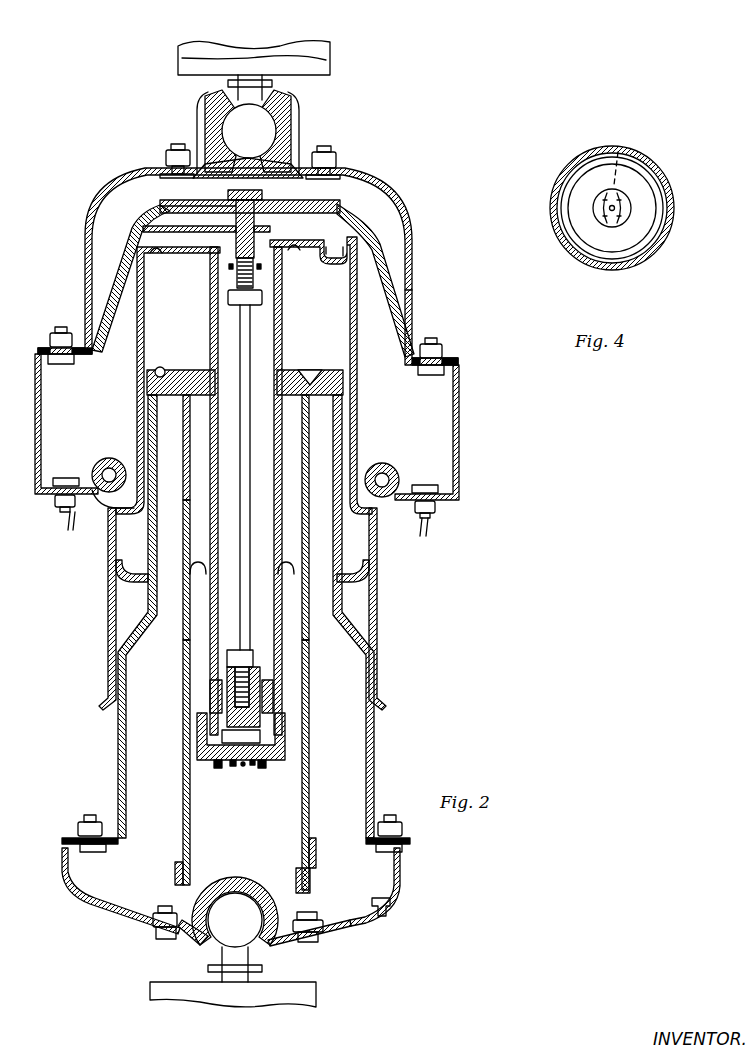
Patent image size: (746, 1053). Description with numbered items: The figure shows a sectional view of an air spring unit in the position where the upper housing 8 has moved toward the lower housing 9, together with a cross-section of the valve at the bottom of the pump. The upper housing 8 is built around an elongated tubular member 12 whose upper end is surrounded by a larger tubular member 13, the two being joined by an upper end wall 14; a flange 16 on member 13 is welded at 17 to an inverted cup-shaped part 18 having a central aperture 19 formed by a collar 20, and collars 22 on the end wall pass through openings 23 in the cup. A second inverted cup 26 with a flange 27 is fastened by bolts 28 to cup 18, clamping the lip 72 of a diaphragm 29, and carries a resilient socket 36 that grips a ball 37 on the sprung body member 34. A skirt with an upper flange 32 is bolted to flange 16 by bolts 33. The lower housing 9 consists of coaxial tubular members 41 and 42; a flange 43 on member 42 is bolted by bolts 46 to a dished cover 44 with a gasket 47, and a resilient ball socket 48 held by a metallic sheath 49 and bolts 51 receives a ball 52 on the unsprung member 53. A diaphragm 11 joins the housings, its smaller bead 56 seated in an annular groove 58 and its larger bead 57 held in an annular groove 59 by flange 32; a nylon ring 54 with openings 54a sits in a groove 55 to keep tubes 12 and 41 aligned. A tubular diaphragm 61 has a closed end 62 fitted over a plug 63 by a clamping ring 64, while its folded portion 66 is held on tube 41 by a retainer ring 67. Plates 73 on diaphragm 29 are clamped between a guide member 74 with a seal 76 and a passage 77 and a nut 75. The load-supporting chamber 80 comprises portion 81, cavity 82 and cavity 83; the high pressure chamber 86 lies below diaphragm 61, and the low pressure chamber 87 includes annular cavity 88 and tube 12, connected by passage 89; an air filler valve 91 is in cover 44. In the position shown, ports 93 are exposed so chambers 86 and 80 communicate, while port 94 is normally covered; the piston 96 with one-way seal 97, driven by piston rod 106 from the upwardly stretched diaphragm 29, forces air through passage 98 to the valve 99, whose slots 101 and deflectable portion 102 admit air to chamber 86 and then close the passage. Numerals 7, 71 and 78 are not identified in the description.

In FIG. 2, the lower housing section 7 is at (462, 437).
In FIG. 2, the upper housing 8 is at (422, 212).
In FIG. 2, the lower housing 9 is at (375, 772).
In FIG. 2, the diaphragm 11 is at (360, 578).
In FIG. 2, the elongated tubular member 12 is at (212, 326).
In FIG. 2, the tubular member 13 is at (349, 352).
In FIG. 2, the upper end wall 14 is at (142, 265).
In FIG. 2, the flange 16 is at (448, 484).
In FIG. 2, the weld 17 is at (458, 492).
In FIG. 2, the inverted cup-shaped part 18 is at (460, 405).
In FIG. 2, the central aperture 19 is at (262, 280).
In FIG. 2, the collar 20 is at (228, 298).
In FIG. 2, the collars 22 is at (333, 262).
In FIG. 2, the openings 23 is at (322, 220).
In FIG. 2, the second inverted cup 26 is at (414, 292).
In FIG. 2, the flange 27 is at (58, 343).
In FIG. 2, the bolts 28 is at (68, 372).
In FIG. 2, the diaphragm 29 is at (392, 262).
In FIG. 2, the upper flange 32 is at (78, 520).
In FIG. 2, the bolts 33 is at (65, 478).
In FIG. 2, the sprung body member 34 is at (320, 60).
In FIG. 2, the resilient socket 36 is at (300, 150).
In FIG. 2, the ball 37 is at (230, 118).
In FIG. 2, the inner tubular member 41 is at (183, 672).
In FIG. 4, the inner tubular member 41 is at (672, 212).
In FIG. 2, the outer tubular member 42 is at (126, 772).
In FIG. 2, the flange 43 is at (85, 830).
In FIG. 2, the dished cover 44 is at (115, 906).
In FIG. 2, the bolts 46 is at (95, 852).
In FIG. 2, the gasket 47 is at (68, 845).
In FIG. 2, the resilient ball socket 48 is at (255, 882).
In FIG. 2, the metallic sheath 49 is at (282, 945).
In FIG. 2, the bolts 51 is at (163, 905).
In FIG. 2, the ball 52 is at (226, 938).
In FIG. 2, the unsprung member 53 is at (276, 995).
In FIG. 2, the nylon ring 54 is at (188, 412).
In FIG. 2, the openings 54a is at (303, 370).
In FIG. 2, the groove 55 is at (200, 370).
In FIG. 2, the bead 56 is at (160, 402).
In FIG. 2, the bead 57 is at (112, 458).
In FIG. 2, the annular groove 58 is at (160, 368).
In FIG. 2, the annular groove 59 is at (100, 458).
In FIG. 2, the elongated tubular diaphragm 61 is at (191, 828).
In FIG. 4, the elongated tubular diaphragm 61 is at (655, 163).
In FIG. 2, the closed end 62 is at (218, 770).
In FIG. 4, the closed end 62 is at (594, 208).
In FIG. 2, the plug 63 is at (222, 700).
In FIG. 2, the clamping ring 64 is at (286, 755).
In FIG. 4, the clamping ring 64 is at (640, 255).
In FIG. 2, the folded portion 66 is at (310, 846).
In FIG. 2, the retainer ring 67 is at (310, 872).
In FIG. 2, the outer shell 71 is at (108, 620).
In FIG. 2, the lip or flange 72 is at (45, 352).
In FIG. 2, the plates 73 is at (186, 200).
In FIG. 2, the guide member 74 is at (236, 240).
In FIG. 2, the nut 75 is at (234, 200).
In FIG. 2, the seal 76 is at (288, 120).
In FIG. 2, the passage 77 is at (266, 200).
In FIG. 2, the clamp shell 78 is at (248, 135).
In FIG. 2, the load-supporting chamber 80 is at (307, 324).
In FIG. 2, the portion of load-supporting chamber 81 is at (354, 320).
In FIG. 2, the cavity 82 is at (150, 222).
In FIG. 2, the cavity 83 is at (380, 205).
In FIG. 2, the high pressure chamber 86 is at (240, 840).
In FIG. 2, the low pressure chamber 87 is at (428, 440).
In FIG. 2, the annular cavity 88 is at (458, 458).
In FIG. 2, the passage 89 is at (160, 254).
In FIG. 2, the air filler valve 91 is at (392, 916).
In FIG. 2, the ports 93 is at (188, 566).
In FIG. 2, the port 94 is at (212, 615).
In FIG. 2, the piston 96 is at (255, 680).
In FIG. 2, the one-way seal 97 is at (262, 720).
In FIG. 2, the passage 98 is at (243, 768).
In FIG. 4, the passage 98 is at (619, 146).
In FIG. 4, the valve 99 is at (600, 215).
In FIG. 2, the slots 101 is at (260, 768).
In FIG. 4, the slots 101 is at (605, 200).
In FIG. 2, the portion between slots 102 is at (253, 768).
In FIG. 4, the portion between slots 102 is at (622, 212).
In FIG. 2, the piston rod 106 is at (250, 355).